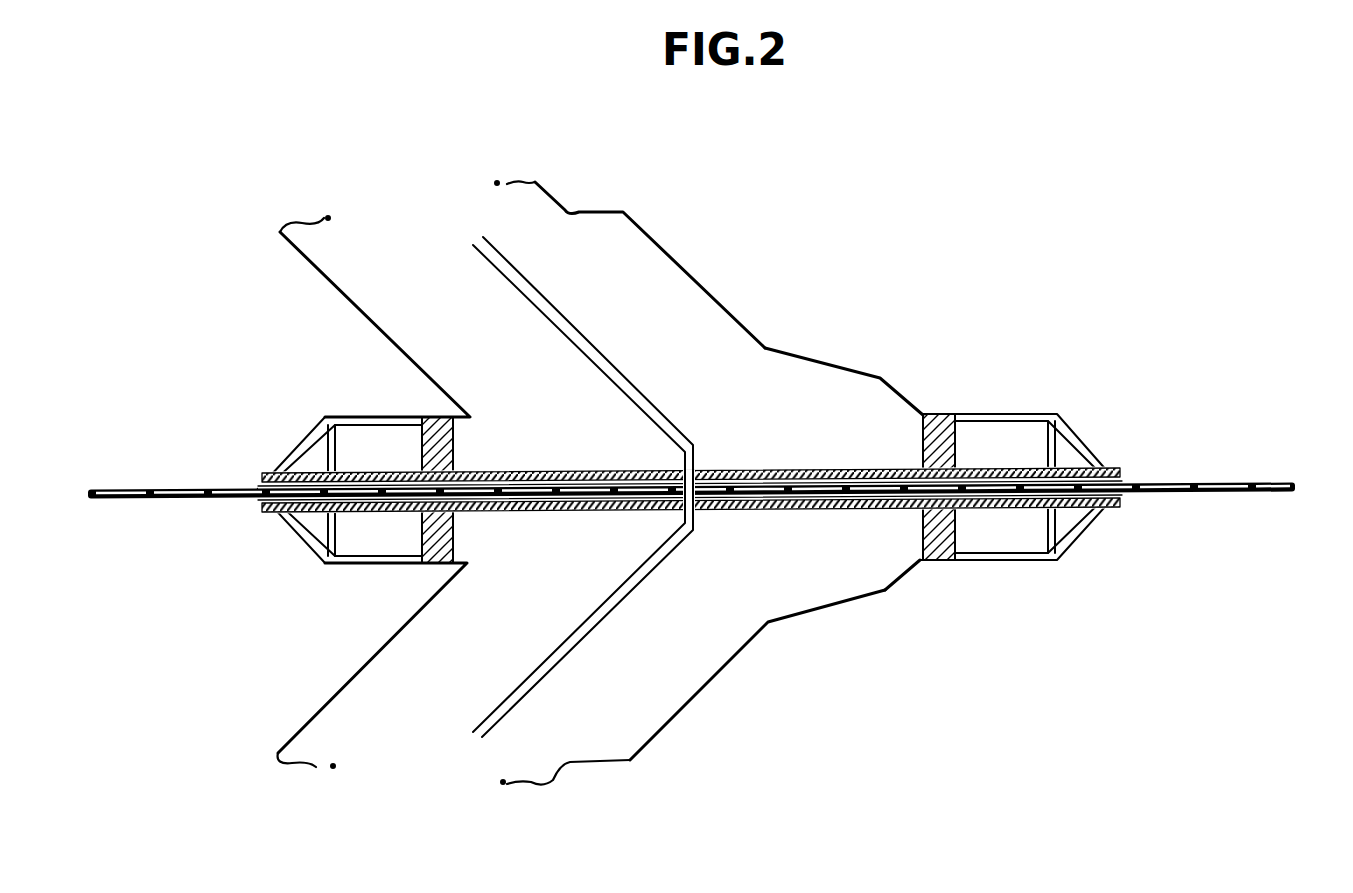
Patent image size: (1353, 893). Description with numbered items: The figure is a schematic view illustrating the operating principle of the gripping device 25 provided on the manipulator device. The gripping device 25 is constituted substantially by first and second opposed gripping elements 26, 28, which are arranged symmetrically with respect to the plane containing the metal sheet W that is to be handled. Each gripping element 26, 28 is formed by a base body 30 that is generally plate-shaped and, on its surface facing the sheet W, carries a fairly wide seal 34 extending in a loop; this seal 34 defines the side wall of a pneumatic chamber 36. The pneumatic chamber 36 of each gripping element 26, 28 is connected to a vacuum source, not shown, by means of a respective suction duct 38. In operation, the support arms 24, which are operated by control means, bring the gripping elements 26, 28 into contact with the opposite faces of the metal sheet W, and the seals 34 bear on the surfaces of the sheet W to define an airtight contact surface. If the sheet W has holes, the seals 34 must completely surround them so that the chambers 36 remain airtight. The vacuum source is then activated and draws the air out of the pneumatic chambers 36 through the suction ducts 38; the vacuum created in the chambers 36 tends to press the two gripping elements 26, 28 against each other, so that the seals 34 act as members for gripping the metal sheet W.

The support arm 24 is at (578, 233).
The gripping device 25 is at (808, 332).
The first gripping element 26 is at (940, 412).
The second gripping element 28 is at (887, 520).
The base body 30 is at (517, 474).
The seal 34 is at (303, 476).
The pneumatic chamber 36 is at (586, 476).
The suction duct 38 is at (602, 359).
The metal sheet W is at (779, 473).